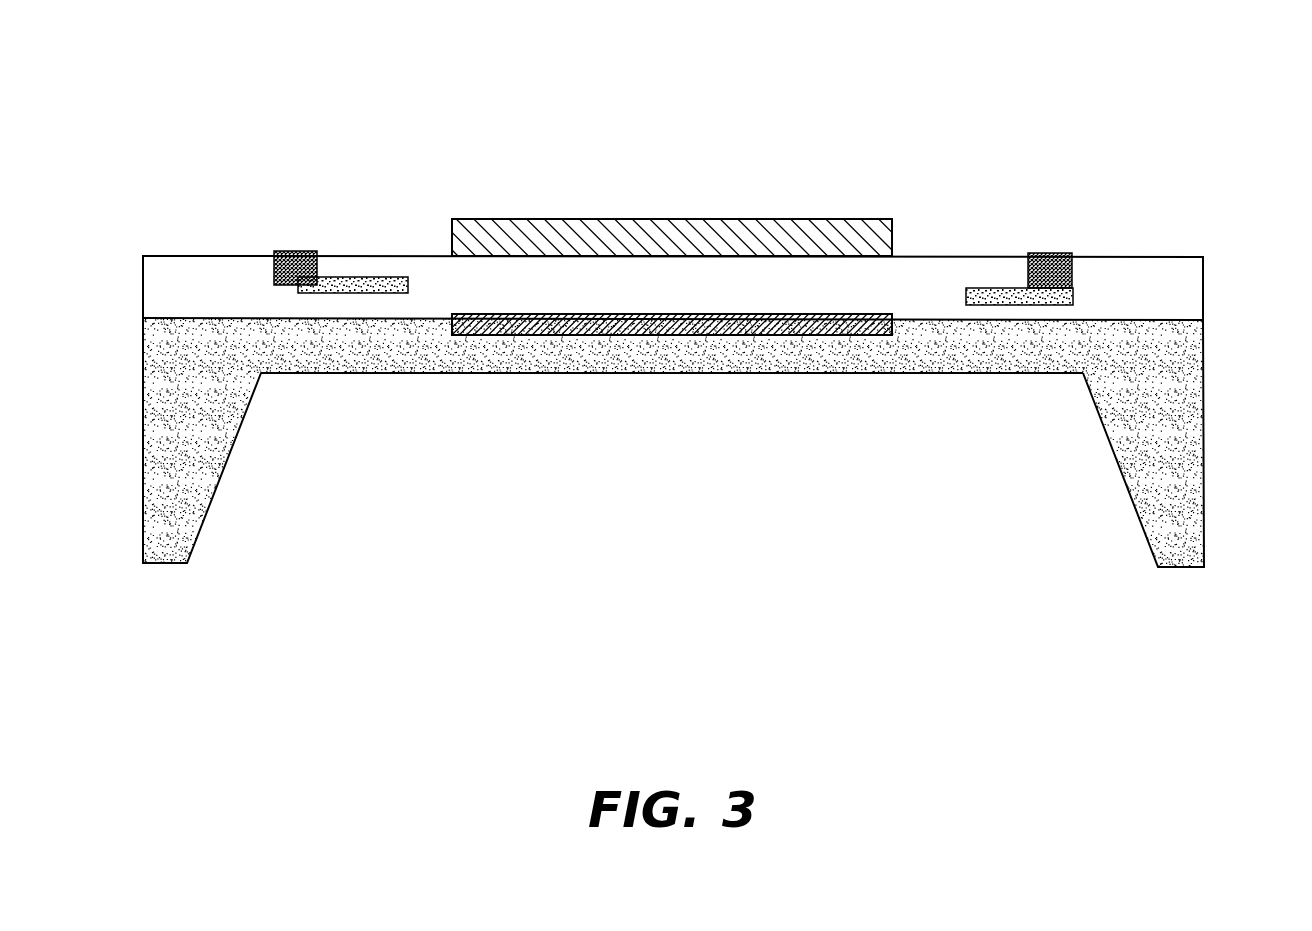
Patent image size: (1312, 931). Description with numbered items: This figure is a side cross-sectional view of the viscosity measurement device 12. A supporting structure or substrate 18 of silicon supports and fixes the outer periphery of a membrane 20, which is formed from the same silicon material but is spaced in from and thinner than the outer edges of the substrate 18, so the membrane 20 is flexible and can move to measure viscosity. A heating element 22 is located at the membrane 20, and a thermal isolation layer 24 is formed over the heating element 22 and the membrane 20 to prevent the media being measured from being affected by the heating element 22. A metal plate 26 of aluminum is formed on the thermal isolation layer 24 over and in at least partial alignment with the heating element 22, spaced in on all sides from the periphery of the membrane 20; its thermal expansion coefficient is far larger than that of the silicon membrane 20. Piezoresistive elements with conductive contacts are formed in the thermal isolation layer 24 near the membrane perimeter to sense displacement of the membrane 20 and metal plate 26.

The viscosity measurement device 12 is at (1182, 114).
The supporting structure or substrate 18 is at (1205, 485).
The membrane 20 is at (643, 362).
The heating element 22 is at (510, 322).
The thermal isolation layer 24 is at (1203, 279).
The metal plate 26 is at (740, 225).